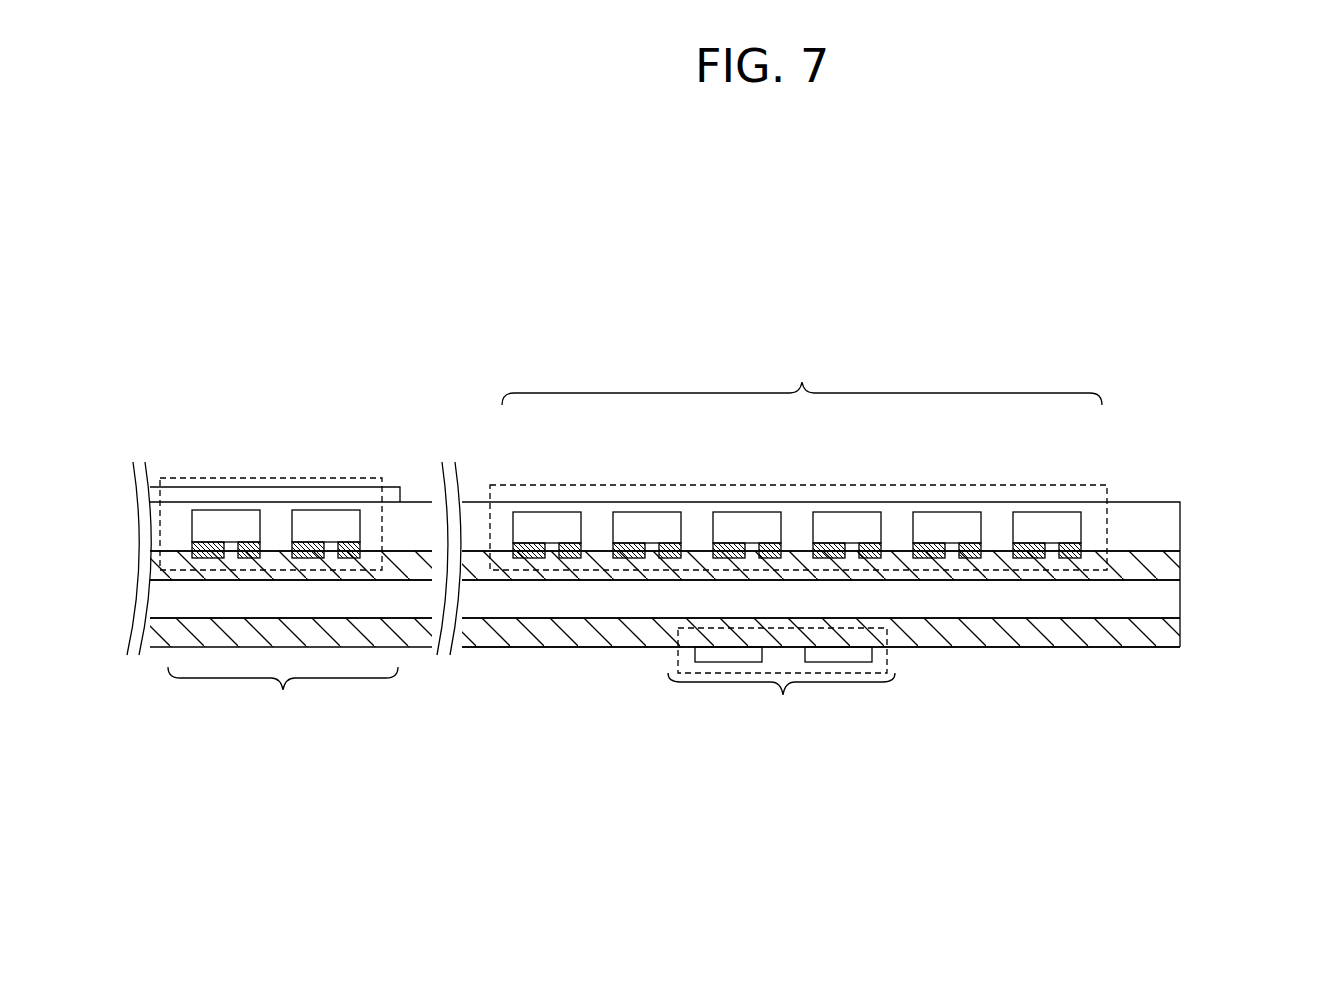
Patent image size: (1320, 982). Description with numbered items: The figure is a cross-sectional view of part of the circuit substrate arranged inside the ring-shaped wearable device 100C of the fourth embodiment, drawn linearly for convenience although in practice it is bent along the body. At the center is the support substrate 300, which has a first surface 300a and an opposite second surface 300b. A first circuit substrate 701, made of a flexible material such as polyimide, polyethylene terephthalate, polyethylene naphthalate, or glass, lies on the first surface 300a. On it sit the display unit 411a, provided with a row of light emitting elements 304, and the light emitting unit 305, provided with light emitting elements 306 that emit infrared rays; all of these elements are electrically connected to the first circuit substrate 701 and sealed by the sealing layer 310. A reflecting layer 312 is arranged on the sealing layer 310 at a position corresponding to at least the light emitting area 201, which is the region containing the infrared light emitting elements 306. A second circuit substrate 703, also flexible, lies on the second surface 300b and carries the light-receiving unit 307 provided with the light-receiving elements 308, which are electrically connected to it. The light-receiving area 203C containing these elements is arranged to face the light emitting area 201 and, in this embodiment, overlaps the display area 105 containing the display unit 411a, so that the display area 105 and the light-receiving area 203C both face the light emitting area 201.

The wearable device 100C is at (178, 165).
The display area 105 is at (802, 377).
The light emitting area 201 is at (283, 696).
The light-receiving area 203C is at (781, 680).
The support substrate 300 is at (717, 646).
The first surface 300a is at (1165, 587).
The second surface 300b is at (1162, 626).
The light emitting element 304 is at (851, 504).
The light emitting unit 305 is at (281, 478).
The light emitting element 306 is at (327, 510).
The light-receiving unit 307 is at (849, 672).
The light-receiving element 308 is at (717, 663).
The sealing layer 310 is at (1180, 528).
The reflecting layer 312 is at (237, 484).
The display unit 411a is at (998, 486).
The first circuit substrate 701 is at (1180, 575).
The second circuit substrate 703 is at (978, 649).